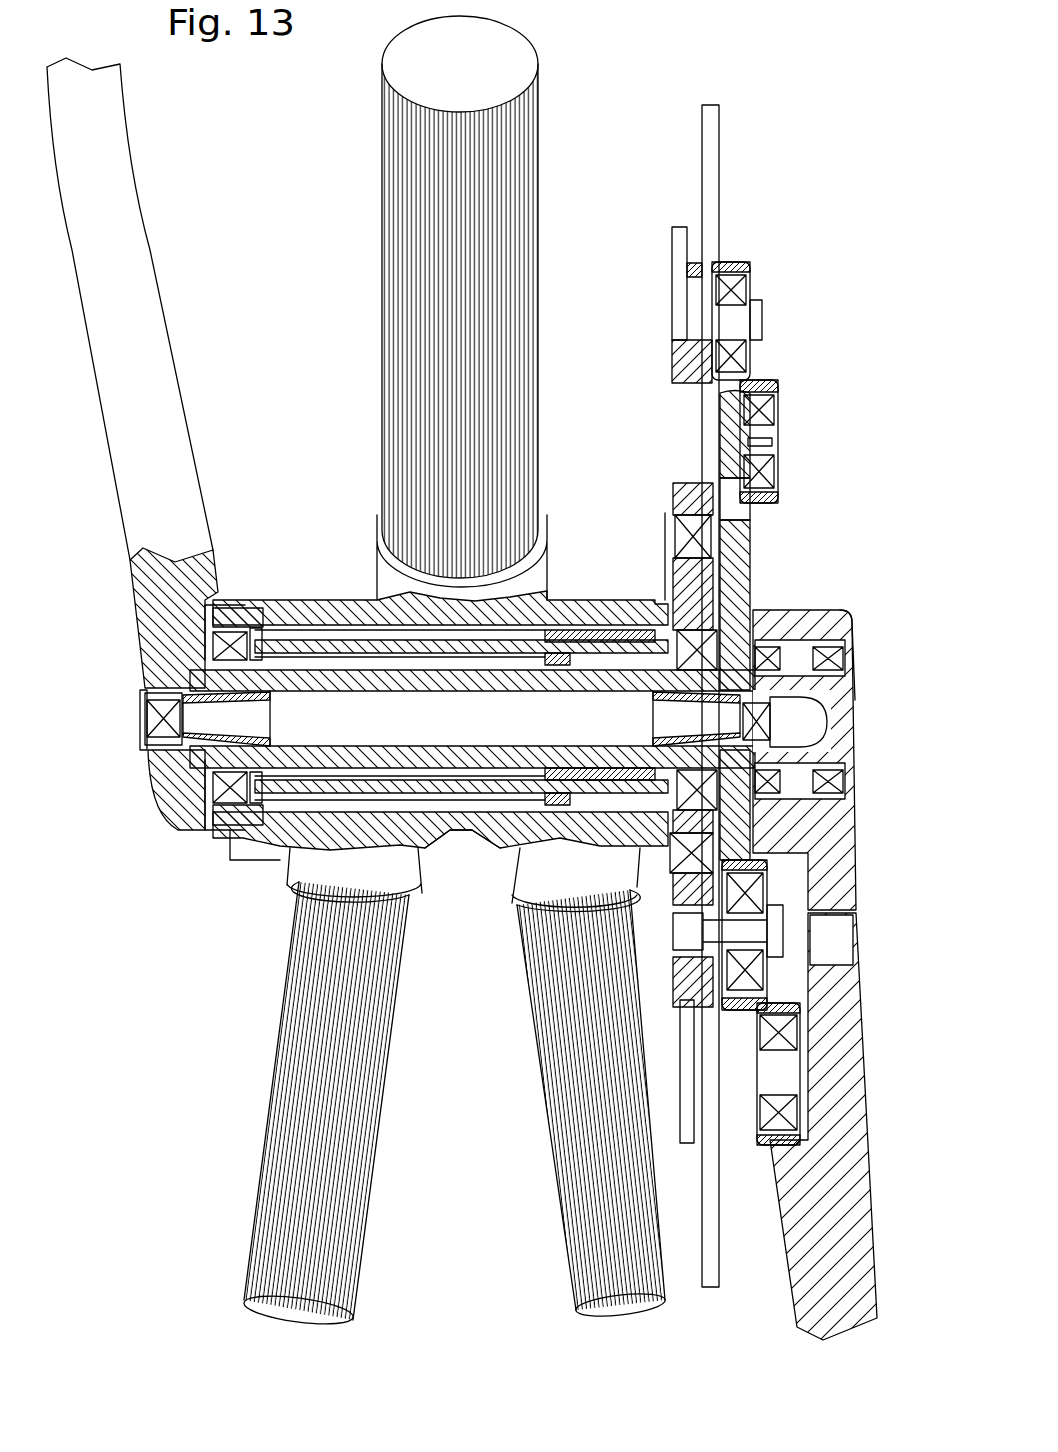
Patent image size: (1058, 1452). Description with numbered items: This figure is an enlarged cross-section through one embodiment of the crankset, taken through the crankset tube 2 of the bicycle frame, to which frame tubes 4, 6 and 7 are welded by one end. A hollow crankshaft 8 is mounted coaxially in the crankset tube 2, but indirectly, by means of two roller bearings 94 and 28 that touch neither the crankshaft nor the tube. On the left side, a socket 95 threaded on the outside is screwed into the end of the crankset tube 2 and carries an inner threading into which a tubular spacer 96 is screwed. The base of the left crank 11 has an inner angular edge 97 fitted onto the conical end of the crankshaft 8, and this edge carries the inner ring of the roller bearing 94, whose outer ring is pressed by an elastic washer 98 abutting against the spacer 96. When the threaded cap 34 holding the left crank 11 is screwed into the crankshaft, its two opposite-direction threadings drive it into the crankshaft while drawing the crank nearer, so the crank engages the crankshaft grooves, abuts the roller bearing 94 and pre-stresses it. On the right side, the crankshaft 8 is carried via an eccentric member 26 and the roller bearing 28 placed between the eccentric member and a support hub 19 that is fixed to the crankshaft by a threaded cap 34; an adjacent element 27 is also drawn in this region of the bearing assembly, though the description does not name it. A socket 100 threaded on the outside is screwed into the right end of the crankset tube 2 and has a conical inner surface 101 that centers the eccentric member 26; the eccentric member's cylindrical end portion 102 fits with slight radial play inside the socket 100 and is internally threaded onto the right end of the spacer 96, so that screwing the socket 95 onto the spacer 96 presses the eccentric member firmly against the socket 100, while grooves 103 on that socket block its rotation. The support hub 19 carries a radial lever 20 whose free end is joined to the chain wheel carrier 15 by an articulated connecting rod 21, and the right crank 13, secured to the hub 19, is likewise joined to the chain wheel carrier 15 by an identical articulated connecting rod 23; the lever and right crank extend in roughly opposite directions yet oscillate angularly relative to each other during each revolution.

The crankset tube 2 is at (290, 612).
The frame tube 4 is at (400, 292).
The frame tube 6 is at (270, 1232).
The frame tube 7 is at (577, 1195).
The crankshaft 8 is at (461, 830).
The left crank 11 is at (128, 500).
The right crank 13 is at (858, 1205).
The chain wheel carrier 15 is at (690, 395).
The support hub 19 is at (843, 630).
The radial lever 20 is at (755, 600).
The articulated connecting rod 21 is at (770, 418).
The articulated connecting rod 23 is at (790, 1000).
The eccentric member 26 is at (690, 560).
The ball bearing 27 is at (690, 527).
The roller bearing 28 is at (735, 795).
The threaded cap 34 is at (150, 690).
The roller bearing 94 is at (232, 805).
The socket 95 is at (248, 612).
The tubular spacer 96 is at (362, 645).
The inner angular edge 97 is at (200, 775).
The elastic washer 98 is at (253, 830).
The socket 100 is at (665, 612).
The conical inner surface 101 is at (680, 605).
The cylindrical end portion 102 is at (588, 640).
The grooves 103 is at (648, 878).